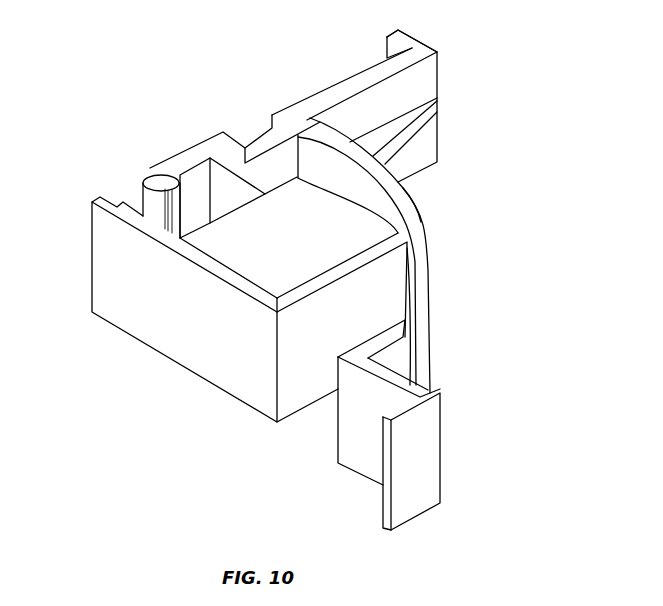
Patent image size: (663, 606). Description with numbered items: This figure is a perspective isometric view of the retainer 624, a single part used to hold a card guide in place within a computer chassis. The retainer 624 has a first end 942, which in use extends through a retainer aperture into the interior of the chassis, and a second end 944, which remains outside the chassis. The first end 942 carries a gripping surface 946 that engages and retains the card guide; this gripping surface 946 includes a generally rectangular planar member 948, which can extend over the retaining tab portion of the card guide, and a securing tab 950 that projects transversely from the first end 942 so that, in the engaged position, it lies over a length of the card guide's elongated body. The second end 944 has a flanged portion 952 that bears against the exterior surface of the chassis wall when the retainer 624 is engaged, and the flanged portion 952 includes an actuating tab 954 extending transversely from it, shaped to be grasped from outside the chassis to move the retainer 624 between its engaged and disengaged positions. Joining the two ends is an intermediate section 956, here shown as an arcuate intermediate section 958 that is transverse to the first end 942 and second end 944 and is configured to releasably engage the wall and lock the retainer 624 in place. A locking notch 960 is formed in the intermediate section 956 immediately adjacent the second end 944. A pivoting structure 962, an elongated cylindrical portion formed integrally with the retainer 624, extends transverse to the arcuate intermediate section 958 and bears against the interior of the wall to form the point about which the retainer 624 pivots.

The retainer 624 is at (520, 176).
The first end 942 is at (443, 80).
The second end 944 is at (262, 392).
The gripping surface 946 is at (342, 78).
The generally rectangular planar member 948 is at (423, 147).
The securing tab 950 is at (428, 38).
The flanged portion 952 is at (100, 286).
The actuating tab 954 is at (428, 466).
The intermediate section 956 is at (427, 256).
The arcuate intermediate section 958 is at (417, 205).
The locking notch 960 is at (393, 362).
The pivoting structure 962 is at (155, 178).